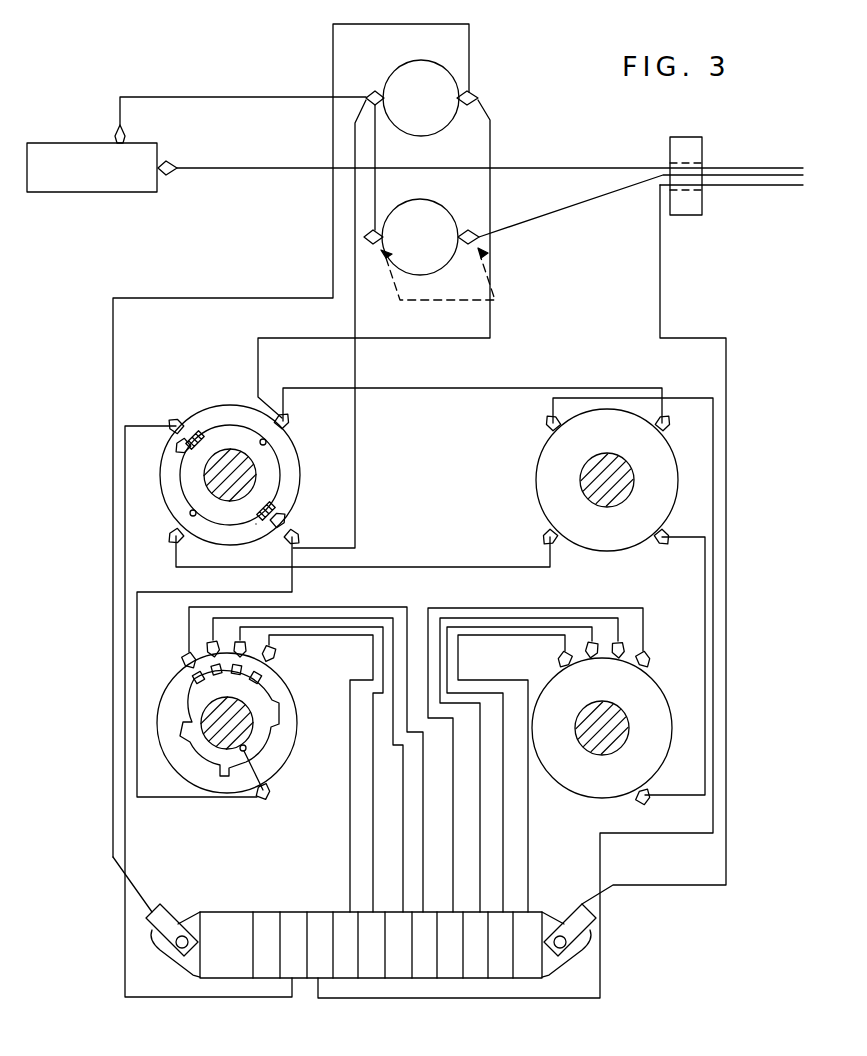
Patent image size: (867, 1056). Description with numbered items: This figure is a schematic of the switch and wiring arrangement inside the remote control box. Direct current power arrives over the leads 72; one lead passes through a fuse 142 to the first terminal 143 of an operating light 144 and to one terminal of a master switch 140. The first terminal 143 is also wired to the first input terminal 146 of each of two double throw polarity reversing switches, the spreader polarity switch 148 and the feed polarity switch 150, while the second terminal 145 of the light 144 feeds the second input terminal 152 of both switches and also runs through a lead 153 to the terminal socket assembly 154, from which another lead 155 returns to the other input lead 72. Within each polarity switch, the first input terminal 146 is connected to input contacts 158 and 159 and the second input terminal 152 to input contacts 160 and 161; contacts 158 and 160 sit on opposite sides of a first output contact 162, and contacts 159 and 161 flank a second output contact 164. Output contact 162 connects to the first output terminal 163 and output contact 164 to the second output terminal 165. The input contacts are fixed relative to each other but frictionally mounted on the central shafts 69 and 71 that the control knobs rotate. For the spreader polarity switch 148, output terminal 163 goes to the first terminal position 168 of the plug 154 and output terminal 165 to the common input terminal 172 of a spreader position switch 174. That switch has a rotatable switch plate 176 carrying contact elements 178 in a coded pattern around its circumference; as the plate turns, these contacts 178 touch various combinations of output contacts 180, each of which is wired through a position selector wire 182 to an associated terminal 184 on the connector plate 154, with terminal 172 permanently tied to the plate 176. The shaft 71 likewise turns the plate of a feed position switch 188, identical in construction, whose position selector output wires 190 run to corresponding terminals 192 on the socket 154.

The central shaft 69 is at (250, 472).
The central shaft 71 is at (609, 462).
The leads 72 is at (770, 180).
The master switch 140 is at (453, 257).
The fuse 142 is at (86, 143).
The first terminal 143 is at (380, 62).
The operating light 144 is at (442, 78).
The second terminal 145 is at (480, 98).
The first input terminal 146 is at (170, 536).
The spreader polarity switch 148 is at (207, 398).
The feed polarity switch 150 is at (522, 480).
The second input terminal 152 is at (287, 420).
The lead 153 is at (333, 65).
The terminal socket assembly 154 is at (312, 905).
The lead 155 is at (658, 304).
The input contact 158 is at (183, 447).
The input contact 159 is at (257, 523).
The input contact 160 is at (203, 428).
The input contact 161 is at (270, 512).
The first output contact 162 is at (188, 432).
The first output terminal 163 is at (172, 420).
The second output contact 164 is at (278, 520).
The second output terminal 165 is at (353, 548).
The first terminal position 168 is at (296, 963).
The common input terminal 172 is at (270, 794).
The spreader position switch 174 is at (340, 690).
The rotatable switch plate 176 is at (213, 753).
The contact elements 178 is at (183, 734).
The output contacts 180 is at (188, 656).
The position selector wires 182 is at (378, 630).
The terminals 184 is at (348, 965).
The feed position switch 188 is at (688, 643).
The position selector output wires 190 is at (538, 630).
The terminals 192 is at (450, 965).